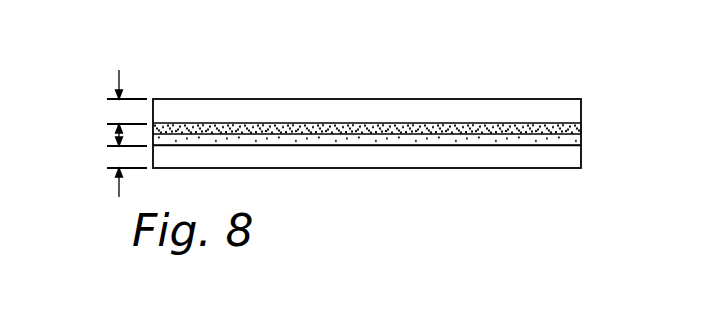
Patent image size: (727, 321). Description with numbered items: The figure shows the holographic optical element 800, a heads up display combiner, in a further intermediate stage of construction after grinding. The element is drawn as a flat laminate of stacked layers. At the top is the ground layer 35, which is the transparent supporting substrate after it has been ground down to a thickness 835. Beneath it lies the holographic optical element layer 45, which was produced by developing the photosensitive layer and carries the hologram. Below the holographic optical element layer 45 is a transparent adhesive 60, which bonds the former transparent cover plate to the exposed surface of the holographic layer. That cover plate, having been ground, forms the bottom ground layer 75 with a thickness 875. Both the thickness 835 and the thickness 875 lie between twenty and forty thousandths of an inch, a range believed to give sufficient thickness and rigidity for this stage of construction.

The holographic optical element 800 is at (367, 158).
The ground layer 35 is at (581, 110).
The holographic optical element layer 45 is at (581, 128).
The transparent adhesive 60 is at (581, 140).
The ground layer 75 is at (581, 158).
The thickness 835 is at (115, 109).
The thickness 875 is at (117, 160).